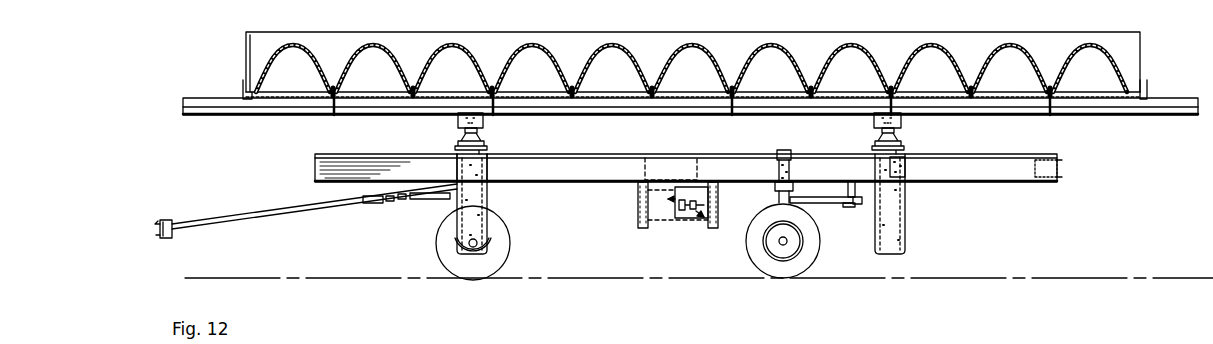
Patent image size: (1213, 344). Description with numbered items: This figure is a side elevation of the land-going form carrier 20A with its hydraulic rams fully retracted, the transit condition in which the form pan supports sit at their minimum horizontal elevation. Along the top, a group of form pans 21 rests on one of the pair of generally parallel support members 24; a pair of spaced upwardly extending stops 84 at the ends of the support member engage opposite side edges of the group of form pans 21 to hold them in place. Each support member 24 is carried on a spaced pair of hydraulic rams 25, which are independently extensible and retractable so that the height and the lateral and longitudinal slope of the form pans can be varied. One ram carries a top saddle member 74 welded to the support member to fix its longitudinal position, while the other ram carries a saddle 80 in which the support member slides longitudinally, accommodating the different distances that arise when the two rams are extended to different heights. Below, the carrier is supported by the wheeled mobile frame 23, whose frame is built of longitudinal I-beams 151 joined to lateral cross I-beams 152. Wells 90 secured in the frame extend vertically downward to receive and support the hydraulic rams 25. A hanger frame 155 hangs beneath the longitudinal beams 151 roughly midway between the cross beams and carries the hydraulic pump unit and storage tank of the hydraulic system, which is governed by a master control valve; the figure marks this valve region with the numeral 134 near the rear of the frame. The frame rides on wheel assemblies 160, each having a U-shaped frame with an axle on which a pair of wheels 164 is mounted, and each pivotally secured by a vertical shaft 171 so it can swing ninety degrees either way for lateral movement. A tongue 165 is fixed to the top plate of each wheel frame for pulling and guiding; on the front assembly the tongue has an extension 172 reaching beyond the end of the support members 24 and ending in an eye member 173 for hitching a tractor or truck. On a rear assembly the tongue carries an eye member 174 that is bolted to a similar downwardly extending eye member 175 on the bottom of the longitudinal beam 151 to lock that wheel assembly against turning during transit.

The form pans 21 is at (238, 41).
The stops 84 is at (243, 86).
The support members 24 is at (201, 116).
The form carrier 20A is at (425, 131).
The top saddle member 74 is at (458, 126).
The saddle 80 is at (874, 121).
The hydraulic rams 25 is at (486, 140).
The longitudinal I-beams 151 is at (583, 174).
The cross I-beams 152 is at (906, 171).
The wells 90 is at (489, 200).
The wheel assemblies 160 is at (511, 250).
The wheels 164 is at (447, 257).
The hanger frame 155 is at (652, 237).
The vertical shaft 171 is at (777, 152).
The eye member 174 is at (363, 205).
The eye member 175 is at (851, 180).
The tongue 165 is at (418, 204).
The extension 172 is at (178, 231).
The eye member 173 is at (171, 218).
The end cap 134 is at (1050, 188).
The wheeled mobile frame 23 is at (1040, 208).